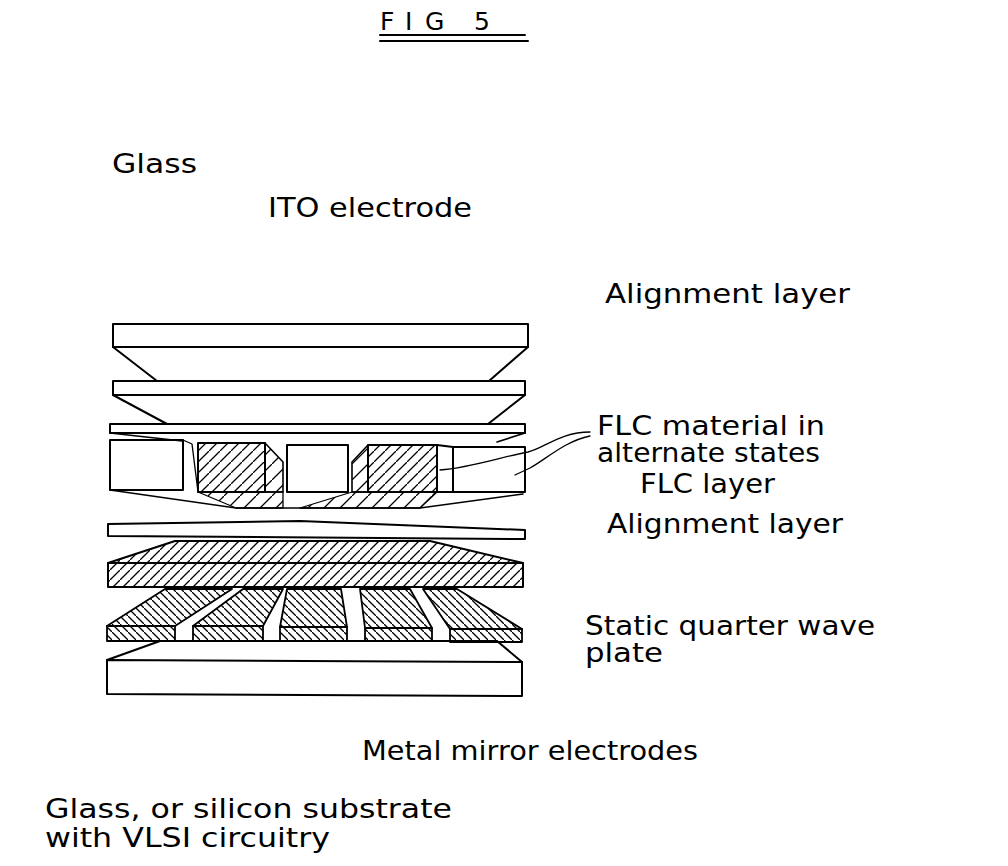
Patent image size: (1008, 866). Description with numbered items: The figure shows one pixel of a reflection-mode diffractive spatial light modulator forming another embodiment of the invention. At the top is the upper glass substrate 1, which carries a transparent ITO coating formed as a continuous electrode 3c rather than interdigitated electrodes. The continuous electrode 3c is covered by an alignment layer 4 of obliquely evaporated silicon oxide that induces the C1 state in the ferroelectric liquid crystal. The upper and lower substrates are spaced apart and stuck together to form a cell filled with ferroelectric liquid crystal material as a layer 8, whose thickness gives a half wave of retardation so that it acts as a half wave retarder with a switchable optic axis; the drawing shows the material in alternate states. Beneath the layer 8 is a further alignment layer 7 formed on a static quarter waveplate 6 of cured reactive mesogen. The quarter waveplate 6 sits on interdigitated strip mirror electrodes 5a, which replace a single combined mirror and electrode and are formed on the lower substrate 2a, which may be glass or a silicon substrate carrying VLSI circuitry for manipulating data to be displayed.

The upper glass substrate 1 is at (181, 322).
The continuous electrode 3c is at (323, 381).
The alignment layer 4 is at (530, 425).
The ferroelectric liquid crystal layer 8 is at (528, 482).
The further alignment layer 7 is at (522, 536).
The static quarter waveplate 6 is at (523, 574).
The interdigitated strip mirror electrodes 5a is at (486, 644).
The lower substrate 2a is at (212, 684).